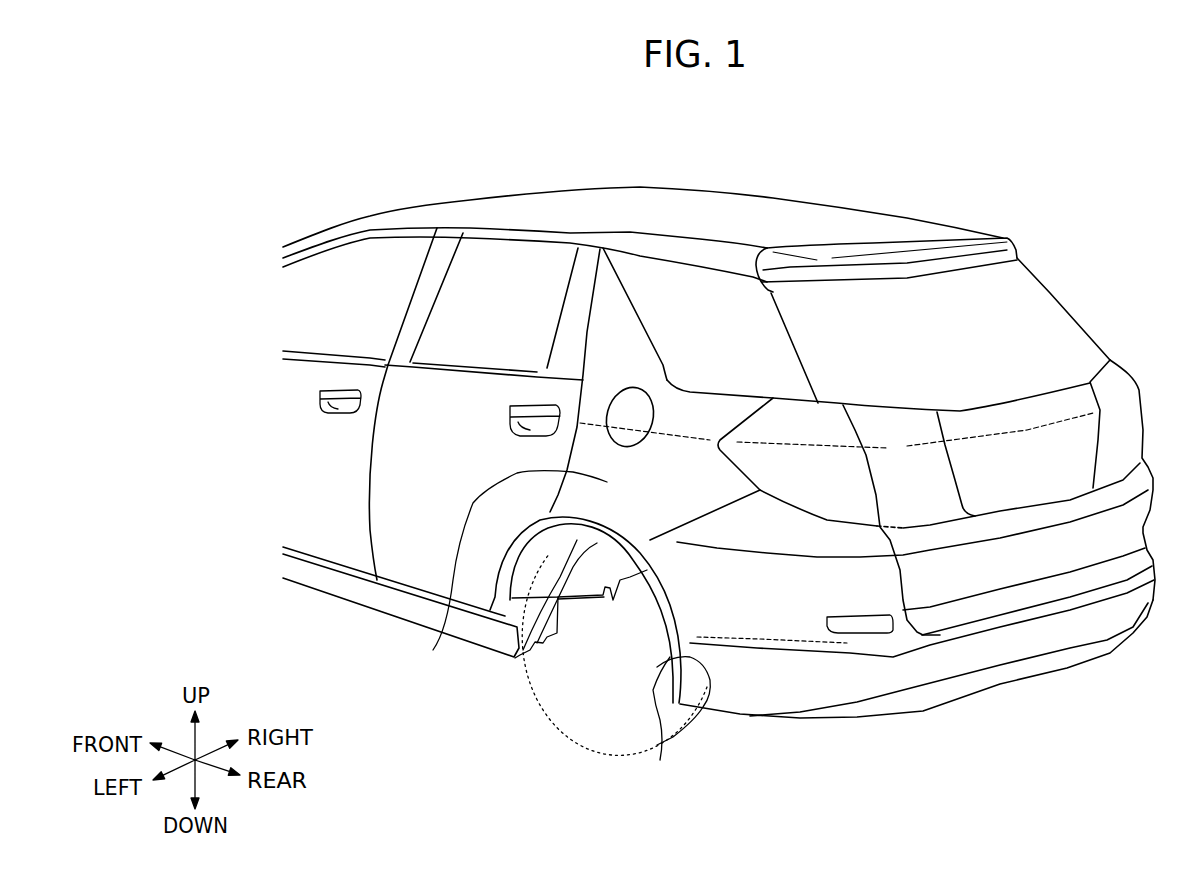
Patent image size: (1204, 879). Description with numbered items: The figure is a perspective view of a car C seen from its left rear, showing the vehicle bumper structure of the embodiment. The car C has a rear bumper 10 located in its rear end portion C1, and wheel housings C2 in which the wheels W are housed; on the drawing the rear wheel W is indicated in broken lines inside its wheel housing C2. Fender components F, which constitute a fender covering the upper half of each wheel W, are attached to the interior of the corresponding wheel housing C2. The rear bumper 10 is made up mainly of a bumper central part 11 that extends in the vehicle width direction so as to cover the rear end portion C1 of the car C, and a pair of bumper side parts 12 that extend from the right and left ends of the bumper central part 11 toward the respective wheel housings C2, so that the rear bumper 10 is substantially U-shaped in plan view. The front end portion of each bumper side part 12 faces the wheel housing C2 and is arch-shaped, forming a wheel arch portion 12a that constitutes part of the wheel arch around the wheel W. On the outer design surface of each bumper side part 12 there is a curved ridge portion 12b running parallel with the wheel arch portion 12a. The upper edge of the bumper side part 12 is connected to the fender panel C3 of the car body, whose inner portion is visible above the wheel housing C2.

The car C is at (646, 160).
The rear end portion C1 is at (1127, 427).
The wheel housing C2 is at (512, 598).
The fender panel C3 is at (433, 650).
The fender component F is at (563, 599).
The wheel W is at (580, 750).
The rear bumper 10 is at (909, 654).
The bumper central part 11 is at (902, 667).
The bumper side part 12 is at (909, 646).
The wheel arch portion 12a is at (662, 760).
The curved ridge portion 12b is at (710, 697).